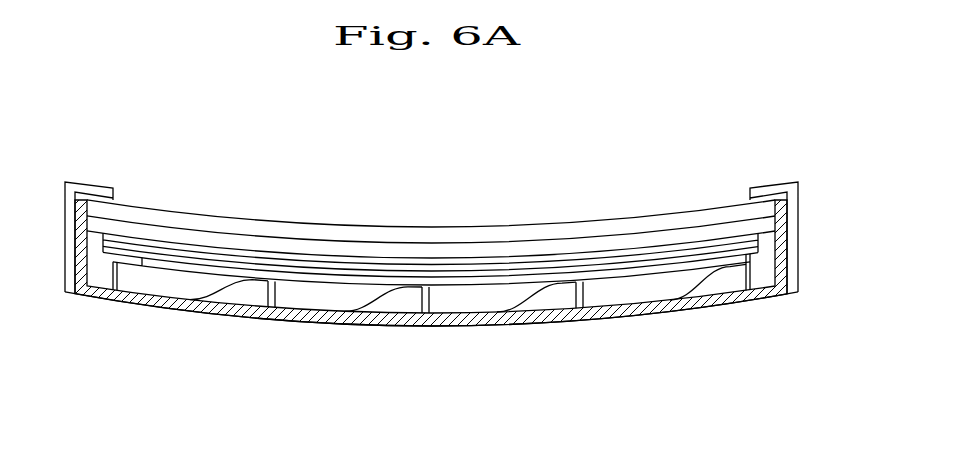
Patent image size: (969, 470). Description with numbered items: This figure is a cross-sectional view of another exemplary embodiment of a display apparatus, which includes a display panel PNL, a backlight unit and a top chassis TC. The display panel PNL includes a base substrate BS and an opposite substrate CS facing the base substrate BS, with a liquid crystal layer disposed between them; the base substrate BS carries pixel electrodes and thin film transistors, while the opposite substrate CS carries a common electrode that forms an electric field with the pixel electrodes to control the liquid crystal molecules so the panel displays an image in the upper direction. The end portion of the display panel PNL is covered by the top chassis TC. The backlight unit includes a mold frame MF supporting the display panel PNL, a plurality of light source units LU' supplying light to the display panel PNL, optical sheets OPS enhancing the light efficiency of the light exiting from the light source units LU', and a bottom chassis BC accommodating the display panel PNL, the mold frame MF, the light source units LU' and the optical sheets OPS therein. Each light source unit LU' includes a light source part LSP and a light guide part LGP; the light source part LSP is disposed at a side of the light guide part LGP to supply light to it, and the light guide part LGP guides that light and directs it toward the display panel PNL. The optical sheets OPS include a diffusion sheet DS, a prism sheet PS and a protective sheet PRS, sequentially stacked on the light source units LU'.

The top chassis TC is at (790, 195).
The bottom chassis BC is at (783, 226).
The mold frame MF is at (767, 259).
The display panel PNL is at (431, 192).
The base substrate BS is at (538, 230).
The opposite substrate CS is at (598, 245).
The optical sheets OPS is at (430, 201).
The prism sheet PS is at (273, 260).
The protective sheet PRS is at (325, 266).
The diffusion sheet DS is at (292, 172).
The light source units LU' is at (431, 350).
The light guide part LGP is at (342, 298).
The light source part LSP is at (373, 397).